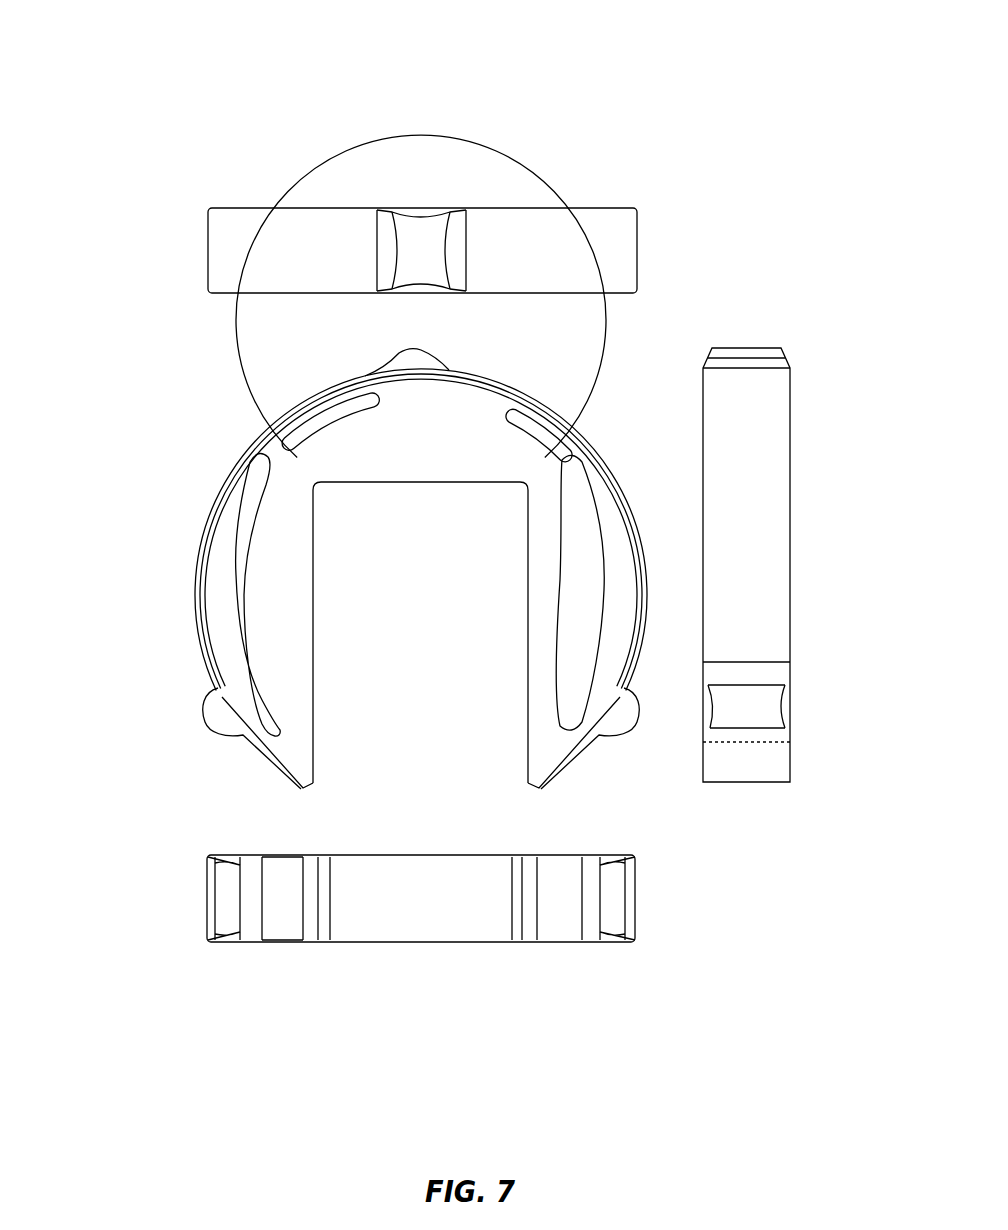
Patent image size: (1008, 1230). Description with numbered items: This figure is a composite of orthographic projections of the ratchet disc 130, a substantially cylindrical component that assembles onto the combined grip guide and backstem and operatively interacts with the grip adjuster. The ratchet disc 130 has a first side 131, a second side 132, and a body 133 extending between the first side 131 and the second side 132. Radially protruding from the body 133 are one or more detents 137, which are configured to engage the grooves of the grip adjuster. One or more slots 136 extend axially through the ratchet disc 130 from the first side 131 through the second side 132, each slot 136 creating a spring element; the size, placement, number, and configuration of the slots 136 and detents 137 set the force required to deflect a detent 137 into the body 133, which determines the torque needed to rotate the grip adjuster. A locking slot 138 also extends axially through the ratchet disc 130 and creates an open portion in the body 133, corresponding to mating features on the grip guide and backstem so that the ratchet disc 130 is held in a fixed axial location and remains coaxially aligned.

The ratchet disc 130 is at (84, 41).
The first side 131 is at (625, 181).
The second side 132 is at (224, 317).
The body 133 is at (796, 594).
The slot 136 is at (586, 562).
The detent 137 is at (446, 352).
The locking slot 138 is at (339, 722).